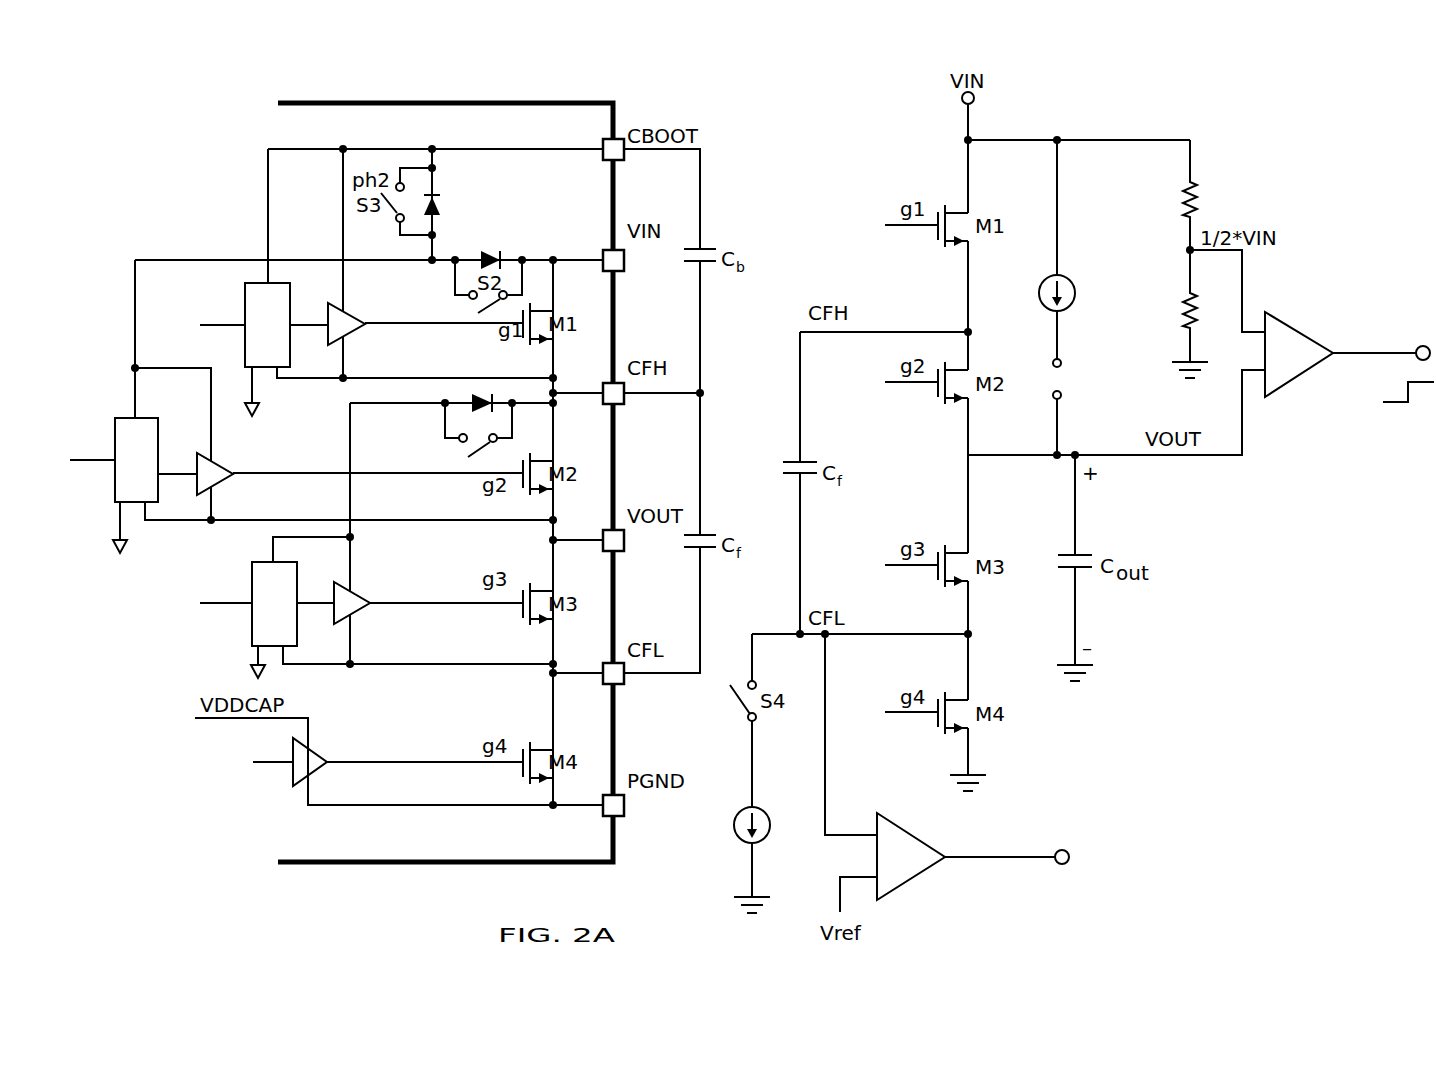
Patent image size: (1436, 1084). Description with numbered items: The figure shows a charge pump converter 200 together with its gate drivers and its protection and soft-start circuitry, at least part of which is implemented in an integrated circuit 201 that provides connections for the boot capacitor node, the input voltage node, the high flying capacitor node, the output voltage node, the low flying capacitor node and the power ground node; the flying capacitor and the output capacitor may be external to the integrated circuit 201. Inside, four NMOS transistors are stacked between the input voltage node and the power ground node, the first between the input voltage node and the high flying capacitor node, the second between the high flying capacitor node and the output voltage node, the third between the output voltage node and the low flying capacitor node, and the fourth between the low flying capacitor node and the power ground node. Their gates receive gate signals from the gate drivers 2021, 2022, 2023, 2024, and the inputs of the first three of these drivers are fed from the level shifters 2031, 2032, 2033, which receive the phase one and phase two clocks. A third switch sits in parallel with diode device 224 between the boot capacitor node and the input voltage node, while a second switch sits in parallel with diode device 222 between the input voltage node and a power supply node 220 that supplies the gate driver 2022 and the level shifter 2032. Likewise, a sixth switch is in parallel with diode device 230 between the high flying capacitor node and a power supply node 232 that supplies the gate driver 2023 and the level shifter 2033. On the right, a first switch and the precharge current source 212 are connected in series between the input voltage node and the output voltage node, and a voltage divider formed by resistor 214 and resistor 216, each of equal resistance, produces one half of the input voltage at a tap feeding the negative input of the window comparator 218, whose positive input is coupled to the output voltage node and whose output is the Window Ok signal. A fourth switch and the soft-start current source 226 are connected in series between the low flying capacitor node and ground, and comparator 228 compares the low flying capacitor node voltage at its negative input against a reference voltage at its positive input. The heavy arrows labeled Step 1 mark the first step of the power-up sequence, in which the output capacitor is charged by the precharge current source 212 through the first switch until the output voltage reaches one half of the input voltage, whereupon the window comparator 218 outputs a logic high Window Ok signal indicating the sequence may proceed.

The charge pump converter 200 is at (168, 143).
The integrated circuit 201 is at (319, 103).
The power supply node 220 is at (180, 260).
The gate driver 2021 is at (352, 313).
The gate driver 2022 is at (222, 464).
The gate driver 2023 is at (357, 593).
The gate driver 2024 is at (316, 753).
The level shifter 2031 is at (245, 338).
The level shifter 2032 is at (170, 403).
The level shifter 2033 is at (252, 618).
The diode device 222 is at (491, 253).
The diode device 224 is at (440, 206).
The diode device 230 is at (478, 393).
The power supply node 232 is at (352, 557).
The current source 212 is at (1039, 290).
The resistor 214 is at (1182, 218).
The resistor 216 is at (1182, 330).
The comparator 218 is at (1300, 380).
The current source 226 is at (735, 832).
The comparator 228 is at (916, 838).
The Step 1 is at (1098, 243).